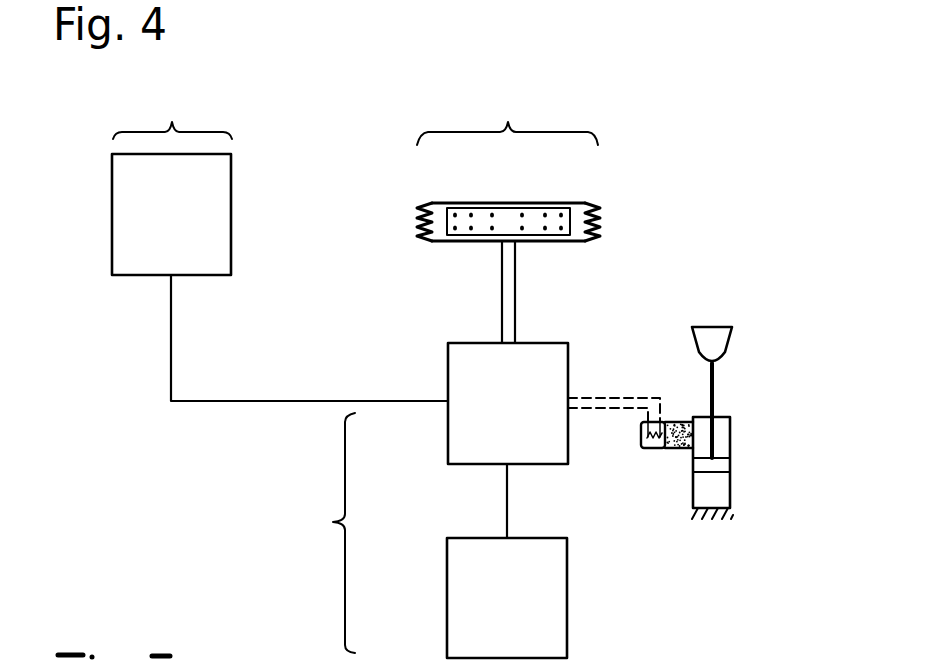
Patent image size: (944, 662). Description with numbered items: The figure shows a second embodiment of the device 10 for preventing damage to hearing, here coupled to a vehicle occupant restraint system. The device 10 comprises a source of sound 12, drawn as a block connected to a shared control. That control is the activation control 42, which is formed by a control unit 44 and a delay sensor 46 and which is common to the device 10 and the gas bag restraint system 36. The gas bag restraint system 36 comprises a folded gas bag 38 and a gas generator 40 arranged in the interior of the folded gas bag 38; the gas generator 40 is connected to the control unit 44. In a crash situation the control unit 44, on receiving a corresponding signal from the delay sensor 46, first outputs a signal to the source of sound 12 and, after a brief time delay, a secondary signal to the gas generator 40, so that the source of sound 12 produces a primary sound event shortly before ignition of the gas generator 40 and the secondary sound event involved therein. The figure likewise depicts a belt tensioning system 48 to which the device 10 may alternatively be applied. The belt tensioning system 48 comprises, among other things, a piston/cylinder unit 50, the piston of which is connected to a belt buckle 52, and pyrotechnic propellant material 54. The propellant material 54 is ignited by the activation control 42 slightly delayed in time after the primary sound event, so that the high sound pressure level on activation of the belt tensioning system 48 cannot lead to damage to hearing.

The device for preventing damage to hearing 10 is at (172, 112).
The source of sound 12 is at (125, 197).
The gas bag restraint system 36 is at (507, 116).
The folded gas bag 38 is at (603, 218).
The gas generator 40 is at (507, 215).
The activation control 42 is at (326, 533).
The control unit 44 is at (470, 428).
The delay sensor 46 is at (468, 592).
The belt tensioning system 48 is at (748, 496).
The piston/cylinder unit 50 is at (731, 452).
The belt buckle 52 is at (713, 347).
The pyrotechnic propellant material 54 is at (675, 450).